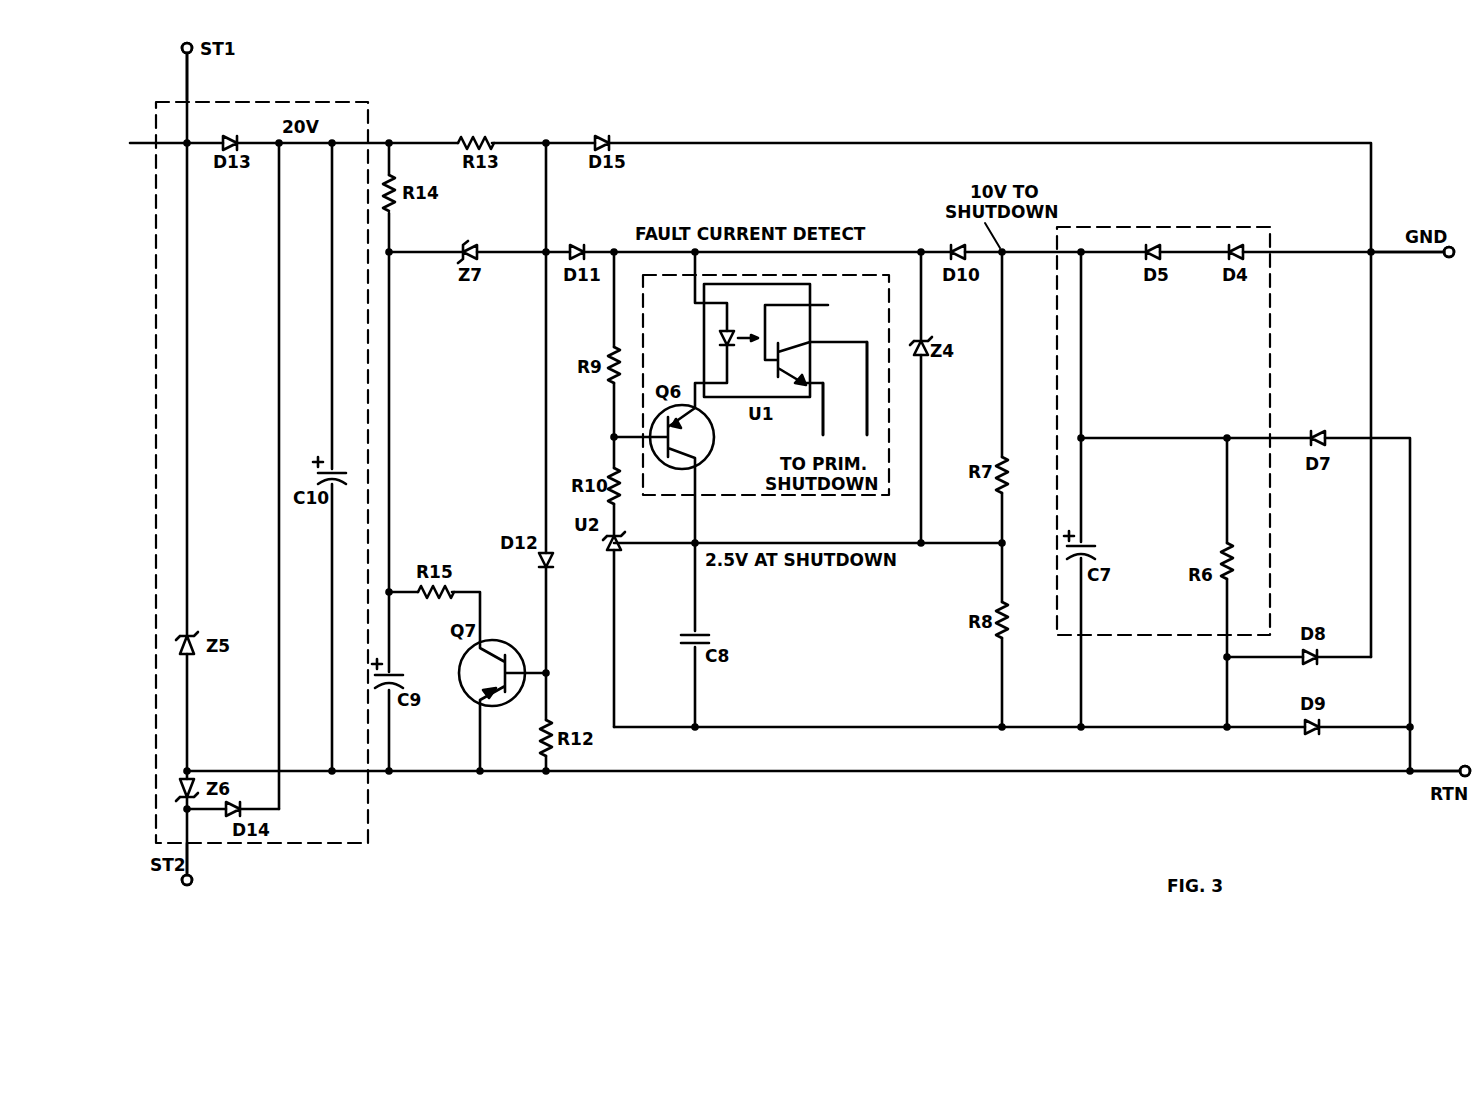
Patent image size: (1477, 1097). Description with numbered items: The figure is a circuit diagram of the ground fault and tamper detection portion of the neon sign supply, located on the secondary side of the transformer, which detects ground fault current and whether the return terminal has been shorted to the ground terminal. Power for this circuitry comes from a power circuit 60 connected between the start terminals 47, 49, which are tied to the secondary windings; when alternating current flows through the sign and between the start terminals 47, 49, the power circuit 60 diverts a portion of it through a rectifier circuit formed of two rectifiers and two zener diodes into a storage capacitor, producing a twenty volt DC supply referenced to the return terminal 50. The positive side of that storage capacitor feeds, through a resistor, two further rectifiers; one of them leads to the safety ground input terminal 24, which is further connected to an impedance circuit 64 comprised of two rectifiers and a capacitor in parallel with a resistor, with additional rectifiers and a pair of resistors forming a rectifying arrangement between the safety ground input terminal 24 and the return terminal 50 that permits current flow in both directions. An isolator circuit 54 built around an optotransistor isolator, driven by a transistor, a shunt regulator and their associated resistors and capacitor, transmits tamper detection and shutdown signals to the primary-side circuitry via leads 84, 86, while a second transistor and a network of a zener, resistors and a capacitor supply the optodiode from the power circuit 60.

The start terminal 49 is at (215, 71).
The start terminal 47 is at (213, 864).
The power circuit 60 is at (285, 472).
The isolator circuit 54 is at (766, 402).
The impedance circuit 64 is at (1191, 431).
The lead 84 is at (798, 415).
The lead 86 is at (846, 388).
The safety ground input terminal 24 is at (1412, 268).
The return terminal 50 is at (1440, 754).